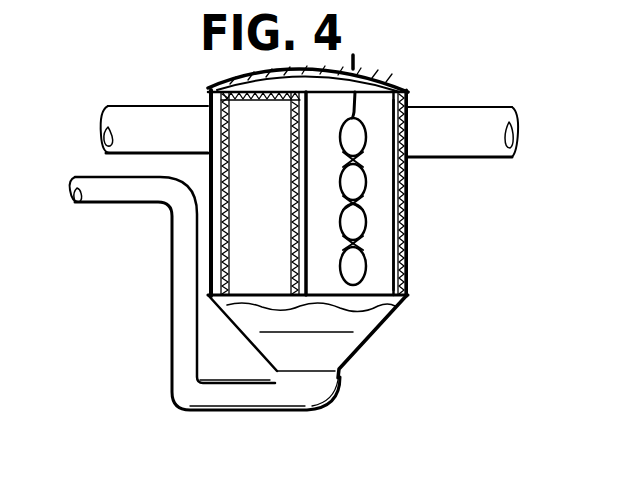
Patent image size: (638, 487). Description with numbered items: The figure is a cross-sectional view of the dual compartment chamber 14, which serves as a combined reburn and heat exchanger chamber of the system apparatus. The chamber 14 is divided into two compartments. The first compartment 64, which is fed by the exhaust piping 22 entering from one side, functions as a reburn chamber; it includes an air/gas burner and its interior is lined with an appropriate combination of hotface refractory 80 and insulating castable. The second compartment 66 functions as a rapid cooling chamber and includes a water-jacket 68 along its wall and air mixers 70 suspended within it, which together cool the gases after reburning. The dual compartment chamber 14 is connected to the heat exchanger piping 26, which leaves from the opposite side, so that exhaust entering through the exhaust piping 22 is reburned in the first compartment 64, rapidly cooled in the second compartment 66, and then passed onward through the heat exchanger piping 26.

The dual compartment chamber 14 is at (409, 82).
The exhaust piping 22 is at (161, 146).
The heat exchanger piping 26 is at (467, 150).
The first compartment 64 is at (268, 235).
The second compartment 66 is at (383, 265).
The water-jacket 68 is at (398, 228).
The air mixers 70 is at (362, 182).
The hotface refractory 80 is at (232, 142).